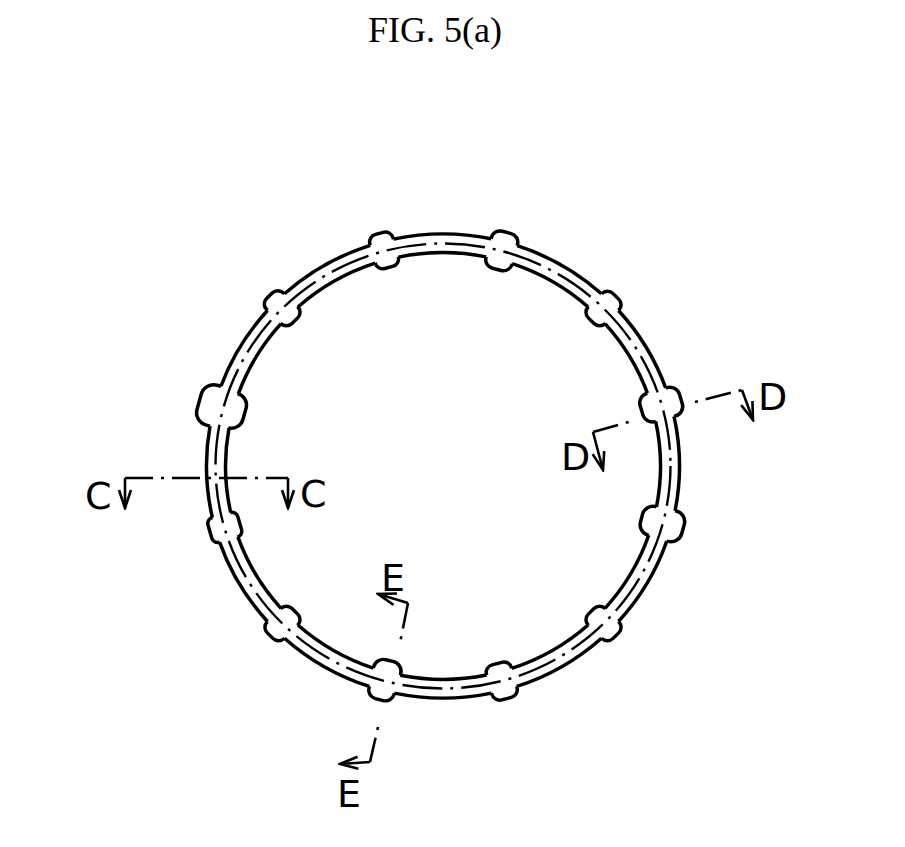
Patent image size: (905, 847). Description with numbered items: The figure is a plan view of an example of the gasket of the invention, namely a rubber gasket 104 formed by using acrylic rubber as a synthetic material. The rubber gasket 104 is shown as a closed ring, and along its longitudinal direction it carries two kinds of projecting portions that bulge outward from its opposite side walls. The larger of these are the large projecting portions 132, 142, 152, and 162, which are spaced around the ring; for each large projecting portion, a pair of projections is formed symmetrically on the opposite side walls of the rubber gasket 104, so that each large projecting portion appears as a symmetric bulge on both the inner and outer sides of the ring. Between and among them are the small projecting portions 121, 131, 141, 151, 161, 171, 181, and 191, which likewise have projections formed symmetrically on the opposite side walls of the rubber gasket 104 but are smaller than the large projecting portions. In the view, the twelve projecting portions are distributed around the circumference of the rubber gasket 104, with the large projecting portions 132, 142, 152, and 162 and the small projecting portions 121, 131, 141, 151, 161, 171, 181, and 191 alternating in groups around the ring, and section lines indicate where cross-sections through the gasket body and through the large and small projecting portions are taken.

The rubber gasket 104 is at (290, 264).
The small projecting portion 121 is at (683, 392).
The small projecting portion 131 is at (634, 300).
The large projecting portion 132 is at (698, 525).
The small projecting portion 141 is at (357, 238).
The large projecting portion 142 is at (517, 230).
The small projecting portion 151 is at (246, 297).
The large projecting portion 152 is at (188, 406).
The small projecting portion 161 is at (201, 553).
The large projecting portion 162 is at (407, 714).
The small projecting portion 171 is at (266, 650).
The small projecting portion 181 is at (503, 712).
The small projecting portion 191 is at (634, 637).